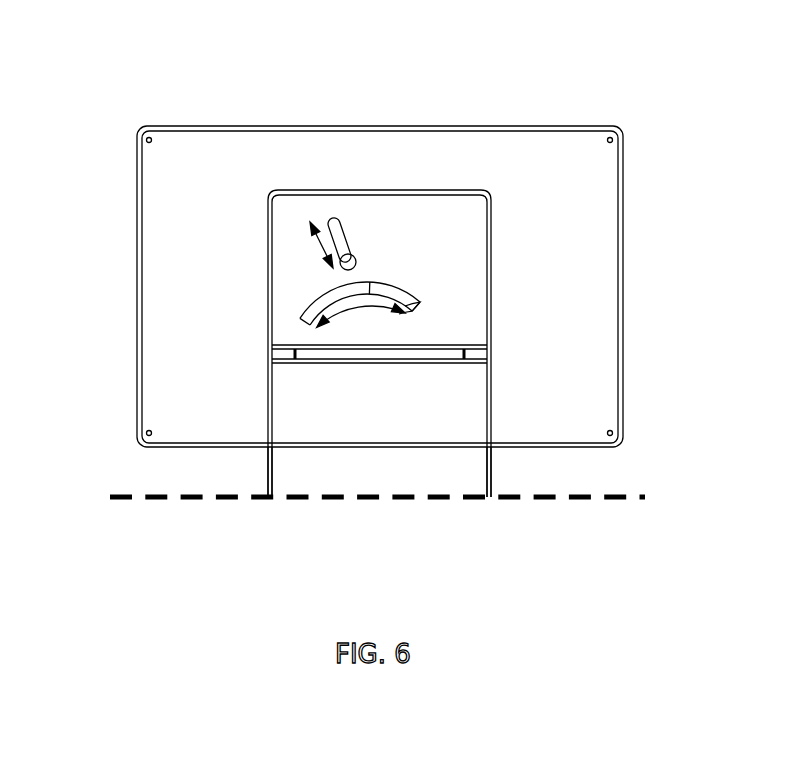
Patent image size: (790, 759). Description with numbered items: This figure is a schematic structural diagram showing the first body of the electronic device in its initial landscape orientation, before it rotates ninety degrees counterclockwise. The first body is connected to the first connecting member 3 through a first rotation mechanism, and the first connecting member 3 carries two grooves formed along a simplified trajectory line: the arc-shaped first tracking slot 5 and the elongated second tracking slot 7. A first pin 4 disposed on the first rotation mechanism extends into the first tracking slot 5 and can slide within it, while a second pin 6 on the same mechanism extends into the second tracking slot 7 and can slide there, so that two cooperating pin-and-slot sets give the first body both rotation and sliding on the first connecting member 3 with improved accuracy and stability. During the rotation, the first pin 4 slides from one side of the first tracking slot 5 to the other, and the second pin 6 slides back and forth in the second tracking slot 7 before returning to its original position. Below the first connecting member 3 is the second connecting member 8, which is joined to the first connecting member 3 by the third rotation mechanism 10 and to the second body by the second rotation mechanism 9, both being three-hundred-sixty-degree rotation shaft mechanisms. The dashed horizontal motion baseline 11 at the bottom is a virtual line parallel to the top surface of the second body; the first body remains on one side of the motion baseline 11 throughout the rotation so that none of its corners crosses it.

The first connecting member 3 is at (490, 173).
The first pin 4 is at (285, 308).
The first tracking slot 5 is at (438, 290).
The second pin 6 is at (354, 240).
The second tracking slot 7 is at (318, 194).
The second connecting member 8 is at (260, 470).
The second rotation mechanism 9 is at (380, 286).
The third rotation mechanism 10 is at (404, 371).
The motion baseline 11 is at (553, 515).